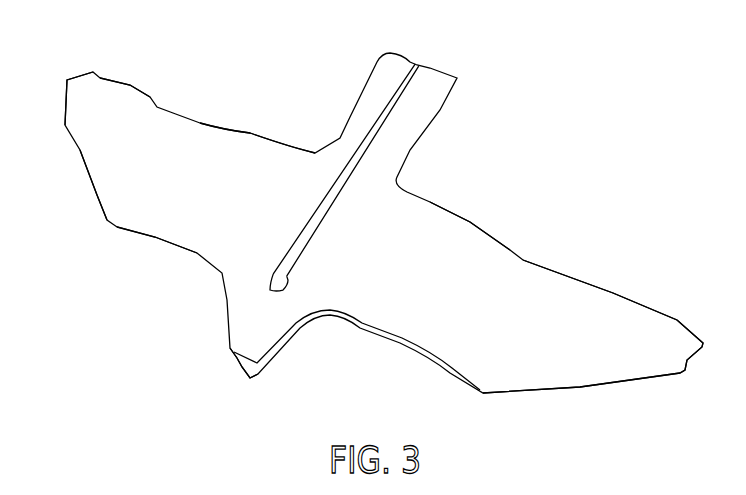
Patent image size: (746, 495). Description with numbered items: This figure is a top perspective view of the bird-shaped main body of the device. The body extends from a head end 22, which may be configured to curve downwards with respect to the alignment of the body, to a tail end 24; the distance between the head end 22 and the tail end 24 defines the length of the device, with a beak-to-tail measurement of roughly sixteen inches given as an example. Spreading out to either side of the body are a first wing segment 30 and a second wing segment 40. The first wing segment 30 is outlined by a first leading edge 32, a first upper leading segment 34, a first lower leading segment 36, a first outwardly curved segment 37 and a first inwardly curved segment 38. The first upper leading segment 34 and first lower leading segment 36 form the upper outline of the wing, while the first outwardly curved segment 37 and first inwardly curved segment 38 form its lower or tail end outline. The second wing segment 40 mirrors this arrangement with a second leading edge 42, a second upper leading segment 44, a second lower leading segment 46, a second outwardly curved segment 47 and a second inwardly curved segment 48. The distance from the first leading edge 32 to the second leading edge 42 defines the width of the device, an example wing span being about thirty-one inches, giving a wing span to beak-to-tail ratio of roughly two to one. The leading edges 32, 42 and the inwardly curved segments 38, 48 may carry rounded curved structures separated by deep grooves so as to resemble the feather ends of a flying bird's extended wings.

The head end 22 is at (245, 370).
The tail end 24 is at (417, 65).
The first wing segment 30 is at (225, 78).
The first leading edge 32 is at (67, 80).
The first upper leading segment 34 is at (155, 237).
The first lower leading segment 36 is at (97, 195).
The first outwardly curved segment 37 is at (250, 133).
The first inwardly curved segment 38 is at (130, 85).
The second wing segment 40 is at (585, 198).
The second leading edge 42 is at (685, 370).
The second upper leading segment 44 is at (393, 343).
The second lower leading segment 46 is at (582, 387).
The second outwardly curved segment 47 is at (470, 222).
The second inwardly curved segment 48 is at (613, 293).